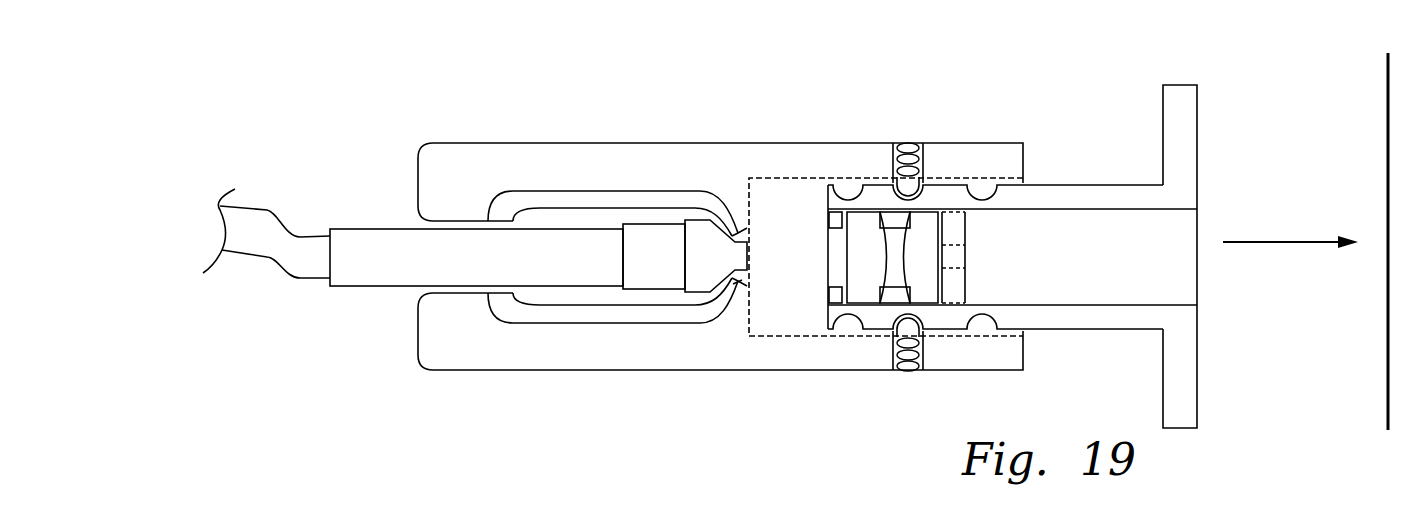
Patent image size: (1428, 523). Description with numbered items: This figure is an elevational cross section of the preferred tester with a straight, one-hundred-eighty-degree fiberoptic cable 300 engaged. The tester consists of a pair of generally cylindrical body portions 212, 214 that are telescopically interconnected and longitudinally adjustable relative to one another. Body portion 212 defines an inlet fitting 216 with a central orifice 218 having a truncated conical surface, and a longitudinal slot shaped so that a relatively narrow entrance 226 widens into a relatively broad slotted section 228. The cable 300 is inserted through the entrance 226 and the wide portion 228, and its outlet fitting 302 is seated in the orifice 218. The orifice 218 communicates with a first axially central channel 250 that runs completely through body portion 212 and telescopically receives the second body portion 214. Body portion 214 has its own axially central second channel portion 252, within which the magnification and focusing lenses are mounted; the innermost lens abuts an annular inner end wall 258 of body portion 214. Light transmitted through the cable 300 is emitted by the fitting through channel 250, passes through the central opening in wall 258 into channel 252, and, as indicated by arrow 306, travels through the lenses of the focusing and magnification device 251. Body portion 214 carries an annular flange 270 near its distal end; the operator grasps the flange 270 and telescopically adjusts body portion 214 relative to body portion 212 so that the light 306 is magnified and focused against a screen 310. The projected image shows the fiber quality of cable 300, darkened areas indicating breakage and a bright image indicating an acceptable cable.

The body portion 212 is at (696, 143).
The body portion 214 is at (1035, 183).
The inlet fitting 216 is at (538, 197).
The orifice 218 is at (736, 230).
The entrance 226 is at (458, 227).
The slotted section 228 is at (588, 220).
The first channel 250 is at (808, 192).
The focusing and magnification device 251 is at (978, 283).
The second channel portion 252 is at (1058, 240).
The inner end wall 258 is at (830, 292).
The flange 270 is at (1180, 85).
The cable 300 is at (377, 228).
The outlet fitting 302 is at (707, 272).
The light 306 is at (1260, 241).
The screen 310 is at (1372, 112).